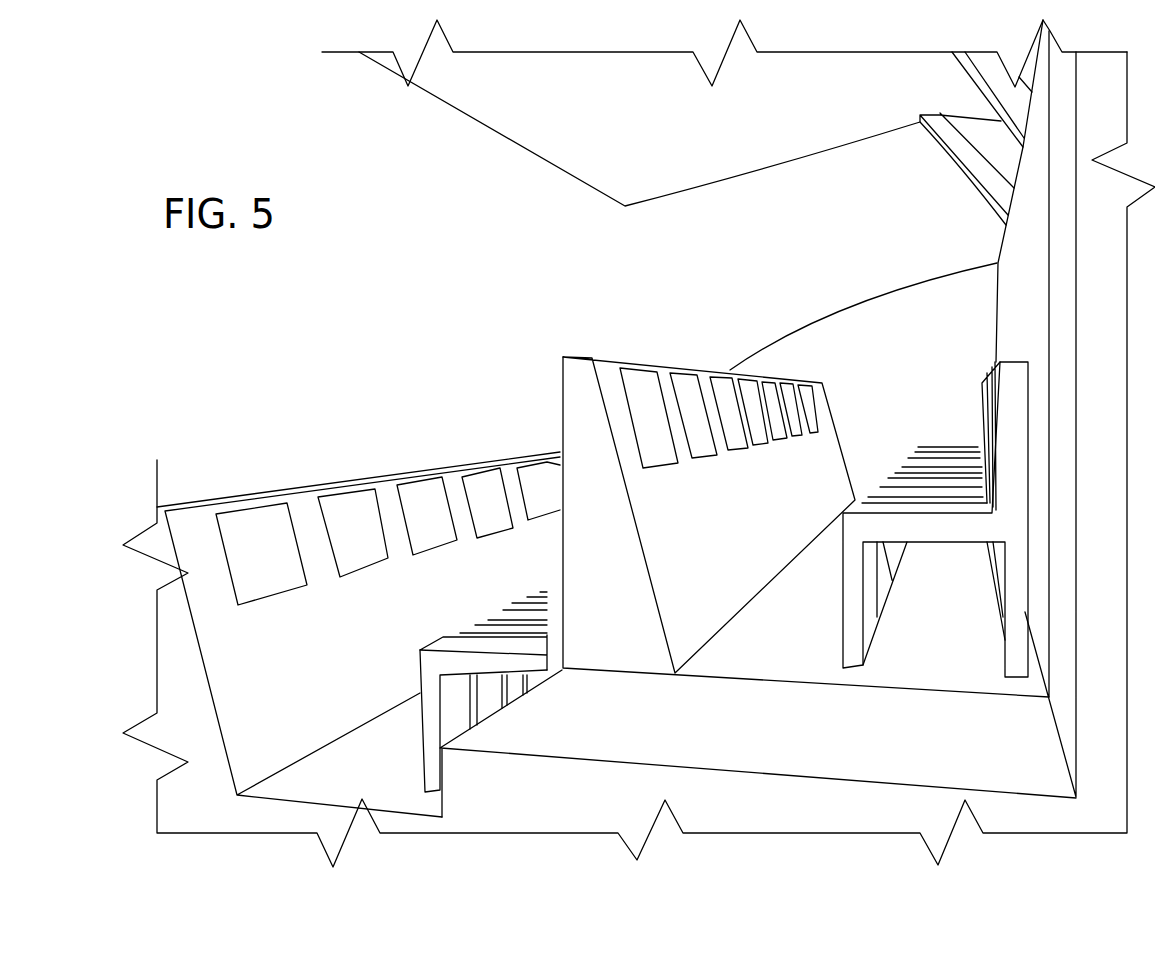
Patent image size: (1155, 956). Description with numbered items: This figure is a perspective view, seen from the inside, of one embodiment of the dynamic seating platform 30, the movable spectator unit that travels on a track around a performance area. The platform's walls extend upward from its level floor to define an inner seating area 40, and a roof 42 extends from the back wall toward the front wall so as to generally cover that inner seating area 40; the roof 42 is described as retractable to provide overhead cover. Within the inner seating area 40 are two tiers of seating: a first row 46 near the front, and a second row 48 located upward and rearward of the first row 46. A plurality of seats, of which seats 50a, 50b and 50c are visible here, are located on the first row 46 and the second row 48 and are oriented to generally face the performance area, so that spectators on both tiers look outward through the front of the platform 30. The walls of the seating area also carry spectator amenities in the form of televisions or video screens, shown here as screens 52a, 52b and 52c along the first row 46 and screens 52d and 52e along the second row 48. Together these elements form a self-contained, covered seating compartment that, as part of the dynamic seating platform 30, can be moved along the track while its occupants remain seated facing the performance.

The dynamic seating platform 30 is at (626, 212).
The inner seating area 40 is at (707, 363).
The roof 42 is at (615, 142).
The first row 46 is at (350, 772).
The second row 48 is at (772, 638).
The seat 50a is at (851, 504).
The seat 50b is at (885, 492).
The seat 50c is at (910, 477).
The window 52a is at (277, 563).
The window 52b is at (371, 541).
The television or video screen 52c is at (412, 524).
The television or video screen 52d is at (641, 390).
The television or video screen 52e is at (690, 392).